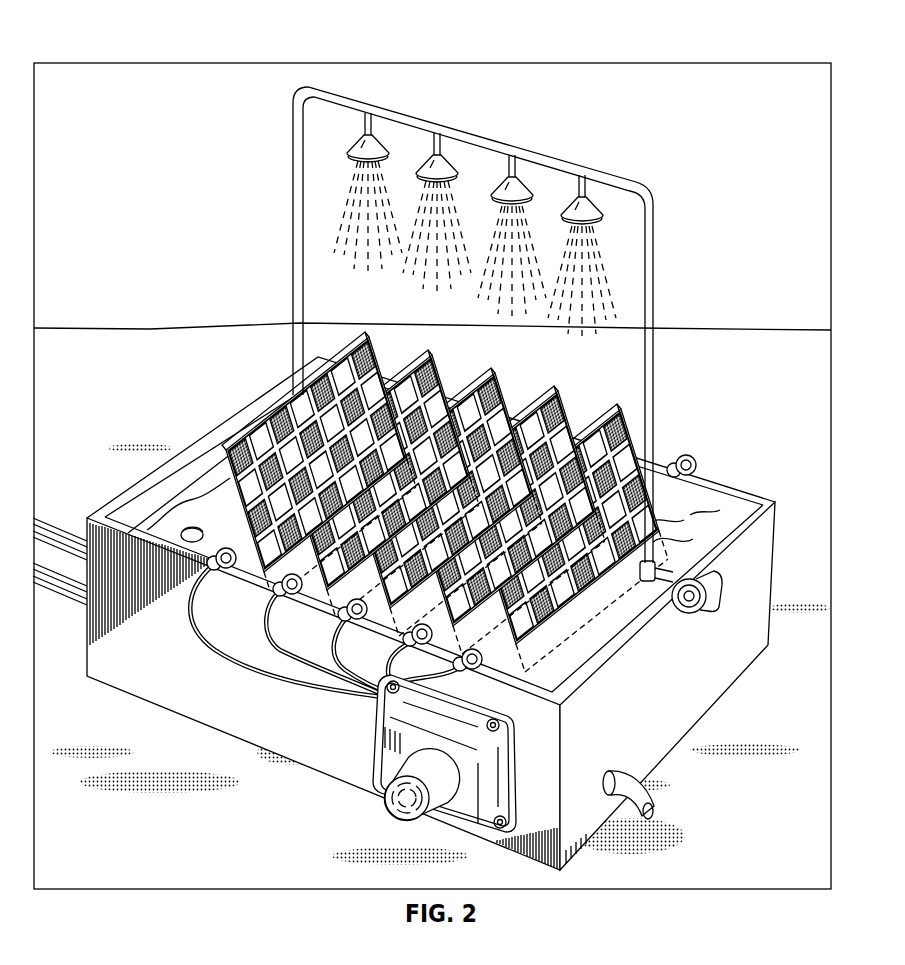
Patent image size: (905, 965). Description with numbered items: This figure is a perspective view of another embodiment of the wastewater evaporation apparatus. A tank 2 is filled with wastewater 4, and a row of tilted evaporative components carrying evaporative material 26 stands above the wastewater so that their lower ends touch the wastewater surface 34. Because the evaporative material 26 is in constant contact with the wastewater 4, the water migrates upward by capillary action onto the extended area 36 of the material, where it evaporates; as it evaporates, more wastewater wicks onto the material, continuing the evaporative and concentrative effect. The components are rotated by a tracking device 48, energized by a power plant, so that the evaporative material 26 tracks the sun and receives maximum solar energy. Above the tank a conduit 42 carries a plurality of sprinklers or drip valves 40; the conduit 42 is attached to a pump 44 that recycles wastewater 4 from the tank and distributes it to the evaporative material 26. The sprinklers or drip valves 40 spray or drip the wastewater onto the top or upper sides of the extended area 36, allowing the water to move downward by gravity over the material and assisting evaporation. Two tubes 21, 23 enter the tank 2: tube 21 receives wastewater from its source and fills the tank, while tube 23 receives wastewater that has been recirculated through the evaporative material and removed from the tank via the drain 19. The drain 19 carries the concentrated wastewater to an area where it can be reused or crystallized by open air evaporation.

The tank 2 is at (439, 601).
The wastewater 4 is at (577, 296).
The drain 19 is at (656, 800).
The tube 21 is at (54, 522).
The tube 23 is at (63, 598).
The evaporative material 26 is at (431, 502).
The wastewater surface 34 is at (693, 537).
The extended area 36 is at (262, 433).
The sprinklers or drip valves 40 is at (447, 157).
The conduit 42 is at (549, 153).
The pump 44 is at (722, 581).
The tracking device 48 is at (378, 742).